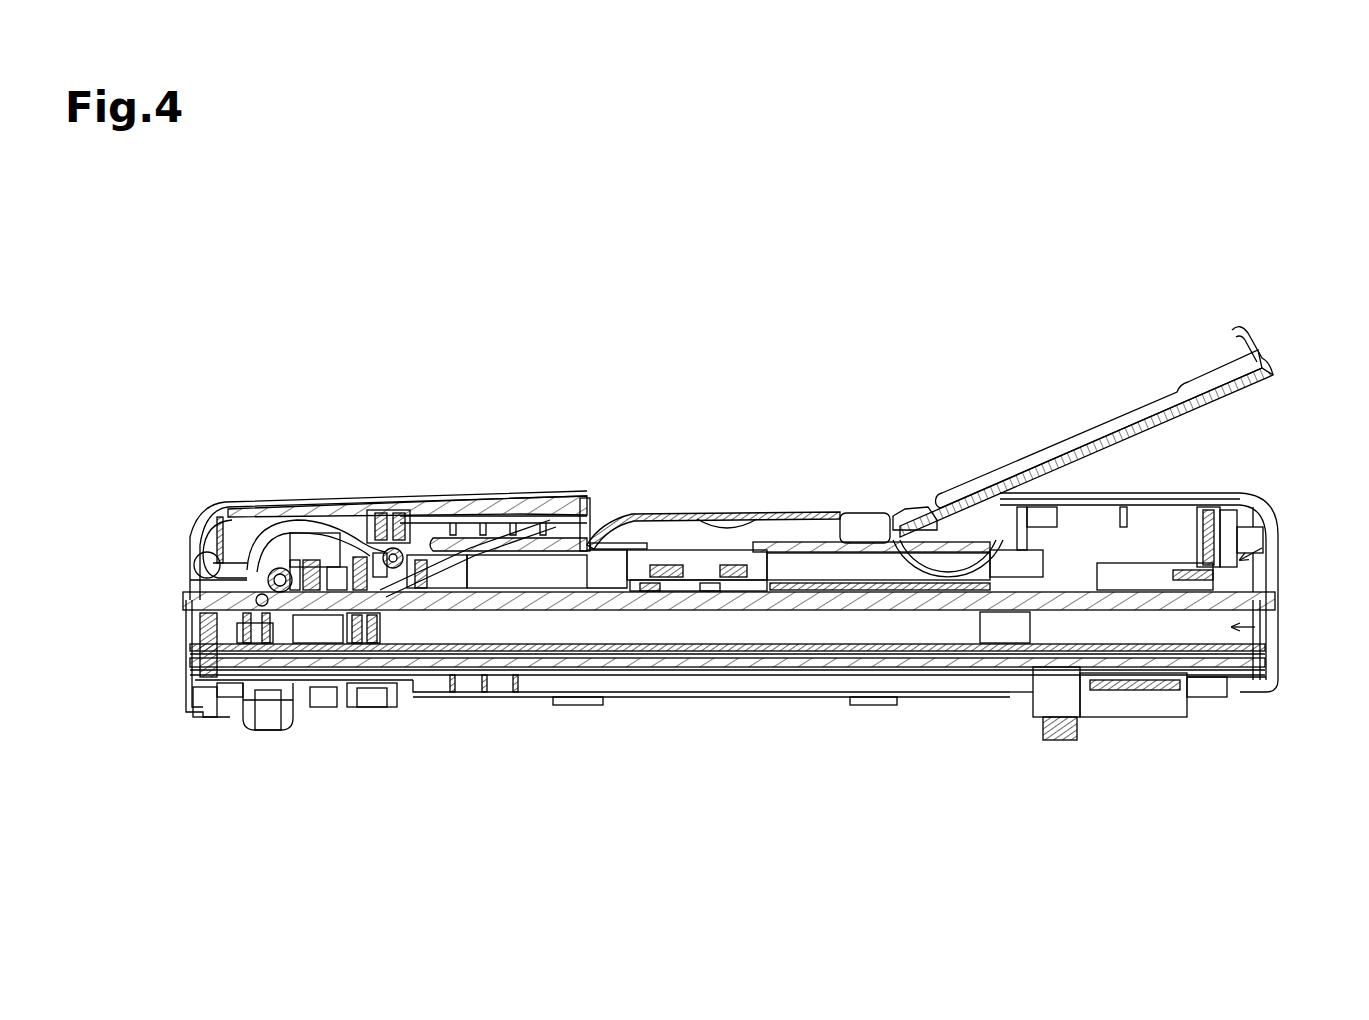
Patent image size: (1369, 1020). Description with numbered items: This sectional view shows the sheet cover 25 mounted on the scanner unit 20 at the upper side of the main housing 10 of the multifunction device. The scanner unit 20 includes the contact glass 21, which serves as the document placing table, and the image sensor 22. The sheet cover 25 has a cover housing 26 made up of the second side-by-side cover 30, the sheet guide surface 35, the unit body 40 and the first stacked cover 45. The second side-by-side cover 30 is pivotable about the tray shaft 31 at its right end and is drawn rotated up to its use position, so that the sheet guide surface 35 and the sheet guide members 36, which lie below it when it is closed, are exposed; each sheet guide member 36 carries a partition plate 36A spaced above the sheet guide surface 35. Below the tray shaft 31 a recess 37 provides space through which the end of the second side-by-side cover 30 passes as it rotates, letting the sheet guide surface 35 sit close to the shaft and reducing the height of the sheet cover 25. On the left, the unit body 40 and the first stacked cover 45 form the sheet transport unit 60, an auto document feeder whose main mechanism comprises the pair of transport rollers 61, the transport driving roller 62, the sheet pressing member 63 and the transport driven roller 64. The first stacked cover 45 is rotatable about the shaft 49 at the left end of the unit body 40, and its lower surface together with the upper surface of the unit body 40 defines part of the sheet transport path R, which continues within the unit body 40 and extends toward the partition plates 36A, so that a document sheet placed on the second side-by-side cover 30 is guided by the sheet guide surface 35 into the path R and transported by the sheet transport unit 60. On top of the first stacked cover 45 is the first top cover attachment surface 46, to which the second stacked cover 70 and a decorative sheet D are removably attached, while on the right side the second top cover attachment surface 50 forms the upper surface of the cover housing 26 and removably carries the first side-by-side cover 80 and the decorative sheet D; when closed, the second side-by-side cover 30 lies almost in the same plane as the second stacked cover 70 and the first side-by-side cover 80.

The main housing 10 is at (1270, 663).
The scanner unit 20 is at (1268, 622).
The contact glass 21 is at (1140, 596).
The image sensor 22 is at (325, 692).
The sheet cover 25 is at (1276, 565).
The cover housing 26 is at (1276, 527).
The second side-by-side cover 30 is at (1210, 400).
The tray shaft 31 is at (930, 508).
The sheet guide surface 35 is at (735, 548).
The sheet guide members 36 is at (856, 530).
The partition plate 36A is at (672, 522).
The recess 37 is at (980, 550).
The unit body 40 is at (420, 645).
The first stacked cover 45 is at (240, 530).
The first top cover attachment surface 46 is at (326, 505).
The shaft 49 is at (190, 552).
The second top cover attachment surface 50 is at (1202, 497).
The sheet transport unit 60 is at (476, 515).
The transport rollers 61 is at (190, 640).
The transport driving roller 62 is at (385, 692).
The sheet pressing member 63 is at (240, 692).
The transport driven roller 64 is at (392, 528).
The second stacked cover 70 is at (272, 510).
The first side-by-side cover 80 is at (1165, 497).
The decorative sheet D is at (357, 505).
The sheet transport path R is at (566, 478).